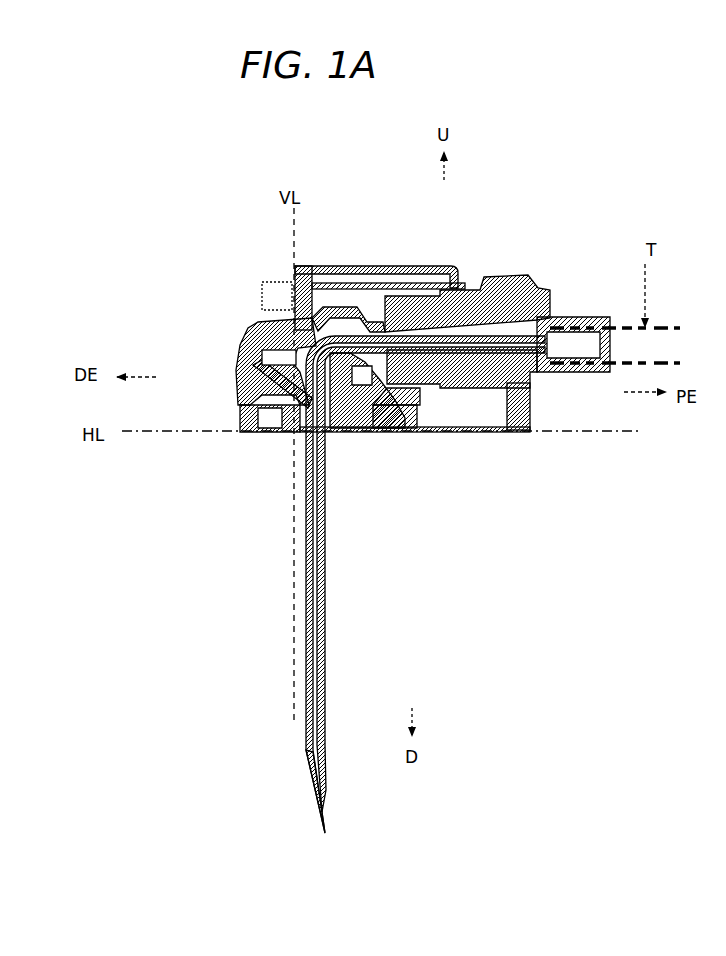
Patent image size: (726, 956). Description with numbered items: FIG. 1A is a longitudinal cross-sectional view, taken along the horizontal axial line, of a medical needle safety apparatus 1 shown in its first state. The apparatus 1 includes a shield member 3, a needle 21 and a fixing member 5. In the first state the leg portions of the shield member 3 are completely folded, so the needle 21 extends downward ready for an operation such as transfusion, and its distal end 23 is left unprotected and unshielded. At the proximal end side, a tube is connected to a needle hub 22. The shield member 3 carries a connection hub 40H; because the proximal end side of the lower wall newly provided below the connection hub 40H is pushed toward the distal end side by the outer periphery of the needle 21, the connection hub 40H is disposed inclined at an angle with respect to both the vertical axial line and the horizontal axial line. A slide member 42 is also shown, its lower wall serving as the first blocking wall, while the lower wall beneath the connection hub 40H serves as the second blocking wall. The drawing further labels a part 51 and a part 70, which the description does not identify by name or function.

The medical needle safety apparatus 1 is at (379, 238).
The shield member 3 is at (459, 265).
The needle hub 22 is at (538, 318).
The lever / retainer portion 51 is at (248, 333).
The connection hub of the shield member 40H is at (302, 367).
The fixing member 5 is at (460, 441).
The fixing member 70 is at (355, 434).
The slide member 42 is at (370, 432).
The needle 21 is at (331, 578).
The distal end 23 is at (330, 752).